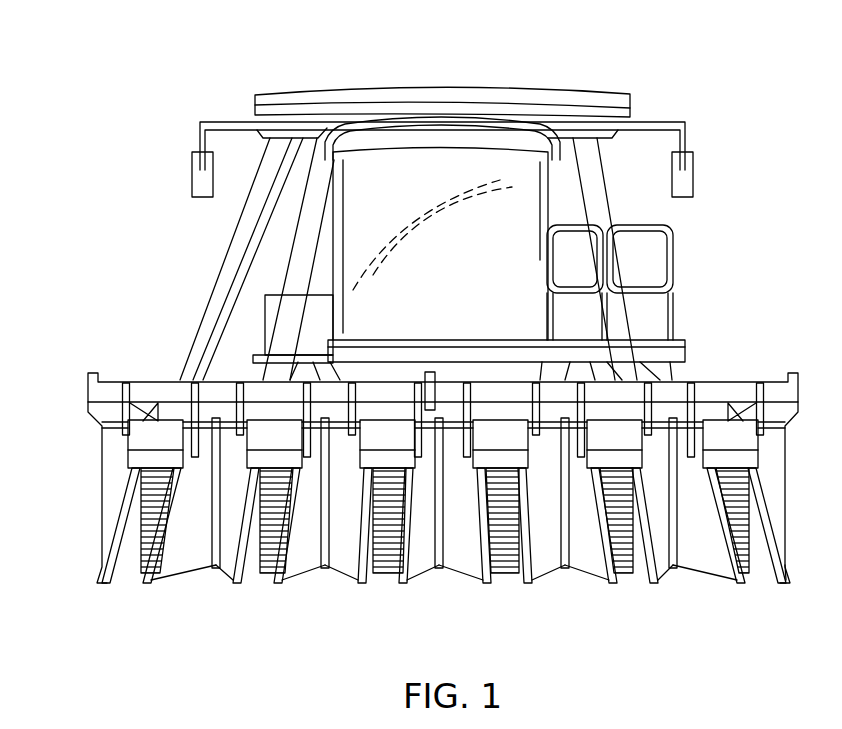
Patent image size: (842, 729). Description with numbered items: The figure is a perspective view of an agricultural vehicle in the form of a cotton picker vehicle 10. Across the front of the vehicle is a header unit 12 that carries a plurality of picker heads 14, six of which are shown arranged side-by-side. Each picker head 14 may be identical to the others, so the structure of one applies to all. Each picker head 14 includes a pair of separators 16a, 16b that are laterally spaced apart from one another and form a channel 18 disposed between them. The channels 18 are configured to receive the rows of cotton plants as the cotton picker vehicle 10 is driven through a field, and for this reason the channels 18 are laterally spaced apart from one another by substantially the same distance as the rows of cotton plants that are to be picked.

The cotton picker vehicle 10 is at (246, 44).
The header unit 12 is at (107, 497).
The picker head 14 is at (236, 582).
The separator 16a is at (607, 580).
The separator 16b is at (652, 580).
The channel 18 is at (632, 592).